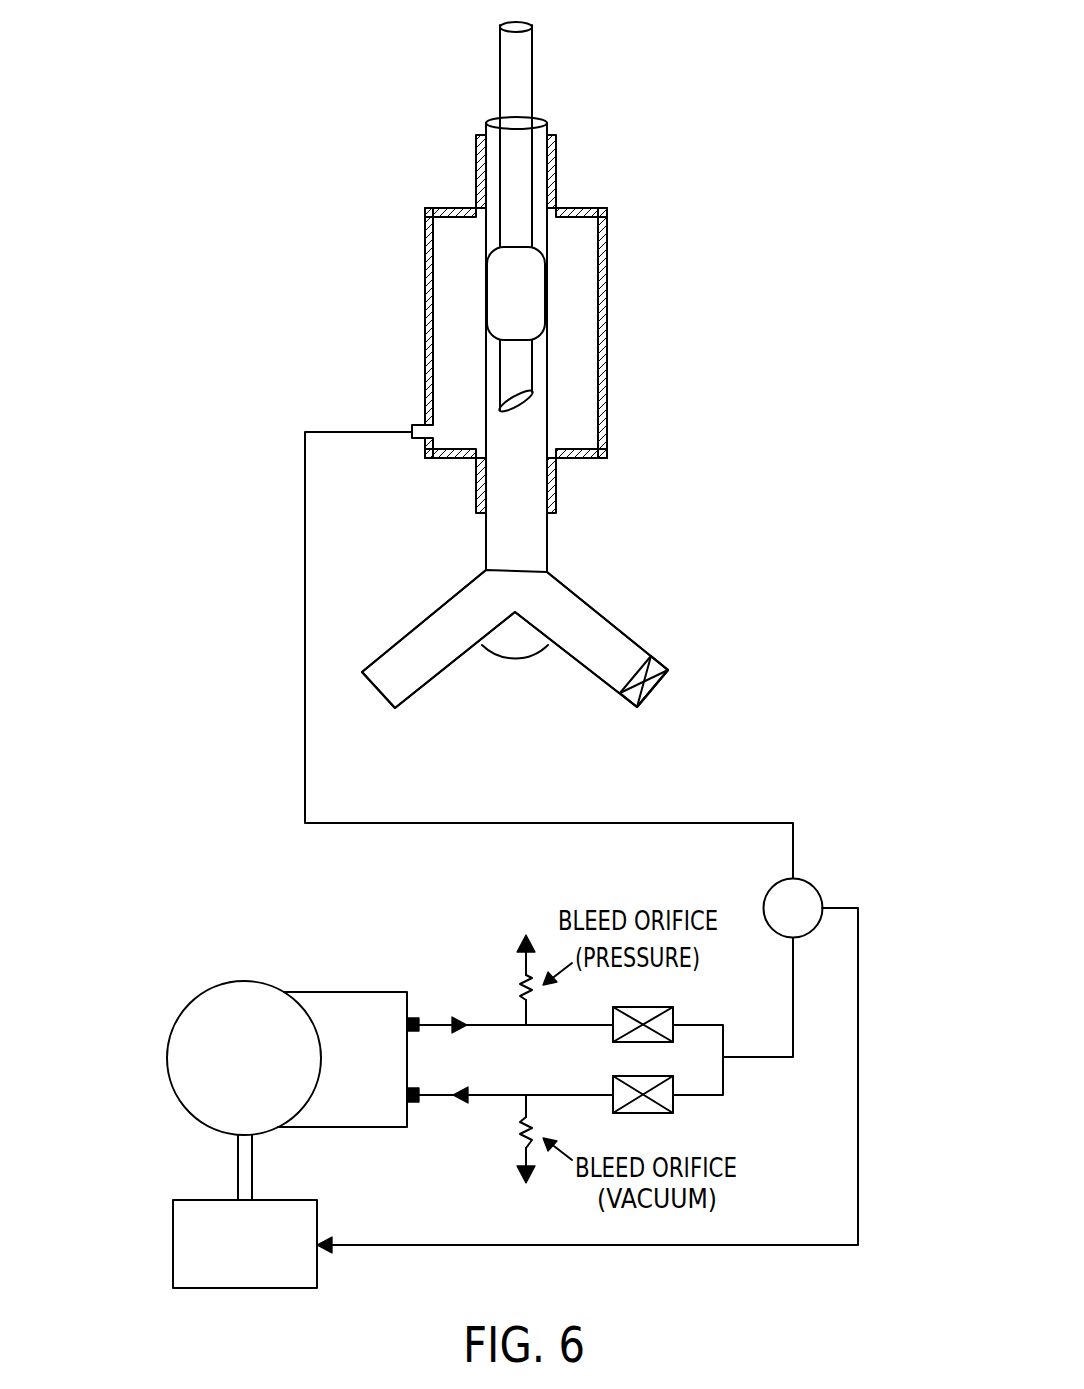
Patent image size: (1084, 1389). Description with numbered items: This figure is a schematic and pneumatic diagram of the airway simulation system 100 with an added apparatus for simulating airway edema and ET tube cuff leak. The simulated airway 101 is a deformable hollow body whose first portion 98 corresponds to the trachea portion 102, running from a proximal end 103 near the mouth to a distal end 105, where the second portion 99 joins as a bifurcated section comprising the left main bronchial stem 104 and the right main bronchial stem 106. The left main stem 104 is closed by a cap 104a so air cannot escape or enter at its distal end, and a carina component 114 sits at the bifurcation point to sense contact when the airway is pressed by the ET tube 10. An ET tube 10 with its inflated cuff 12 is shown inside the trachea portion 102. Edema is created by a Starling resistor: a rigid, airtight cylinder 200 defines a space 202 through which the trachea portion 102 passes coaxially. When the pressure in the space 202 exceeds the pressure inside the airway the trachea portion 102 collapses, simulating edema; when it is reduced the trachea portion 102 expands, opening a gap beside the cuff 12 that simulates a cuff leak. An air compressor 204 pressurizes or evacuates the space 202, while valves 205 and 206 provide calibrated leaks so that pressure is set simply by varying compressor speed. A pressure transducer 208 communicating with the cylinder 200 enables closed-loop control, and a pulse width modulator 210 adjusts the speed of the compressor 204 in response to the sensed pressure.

The ET tube 10 is at (500, 93).
The ET tube cuff 12 is at (492, 295).
The first portion 98 is at (450, 325).
The second portion 99 is at (380, 615).
The airway simulation system 100 is at (718, 84).
The simulated airway 101 is at (540, 230).
The trachea portion 102 is at (497, 435).
The proximal end 103 is at (547, 123).
The left main bronchial stem portion 104 is at (620, 630).
The cap 104a is at (665, 690).
The distal end 105 is at (548, 567).
The right main bronchial stem portion 106 is at (448, 600).
The carina component 114 is at (522, 660).
The cylinder 200 is at (607, 398).
The space 202 is at (592, 358).
The air compressor 204 is at (197, 997).
The valve 205 is at (673, 1010).
The valve 206 is at (676, 1103).
The pressure transducer 208 is at (813, 885).
The pulse width modulator 210 is at (317, 1218).